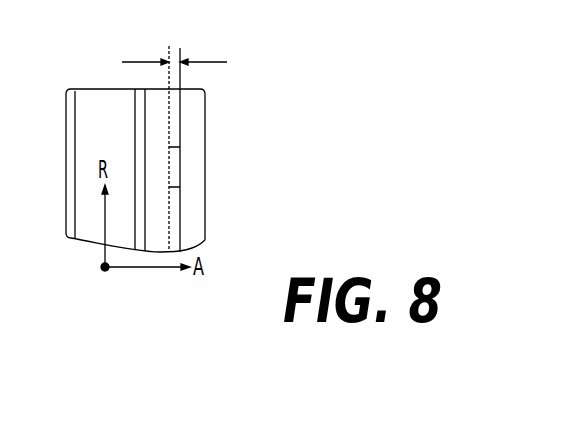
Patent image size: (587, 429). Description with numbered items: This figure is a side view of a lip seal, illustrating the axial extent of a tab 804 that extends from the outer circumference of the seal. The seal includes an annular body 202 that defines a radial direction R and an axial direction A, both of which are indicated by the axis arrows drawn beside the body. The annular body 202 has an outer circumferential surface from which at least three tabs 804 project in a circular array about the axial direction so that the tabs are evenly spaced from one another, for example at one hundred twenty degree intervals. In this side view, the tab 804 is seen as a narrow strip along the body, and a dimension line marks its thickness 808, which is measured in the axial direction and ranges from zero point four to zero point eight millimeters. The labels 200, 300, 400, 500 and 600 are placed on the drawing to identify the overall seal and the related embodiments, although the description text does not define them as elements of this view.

The cylindrical body / housing assembly 200 is at (133, 39).
The annular body 202 is at (227, 162).
The pump embodiment 300 is at (308, 60).
The pump embodiment 400 is at (390, 29).
The pump embodiment 500 is at (428, 29).
The pump embodiment 600 is at (463, 29).
The tab 804 is at (181, 172).
The thickness 808 is at (188, 65).